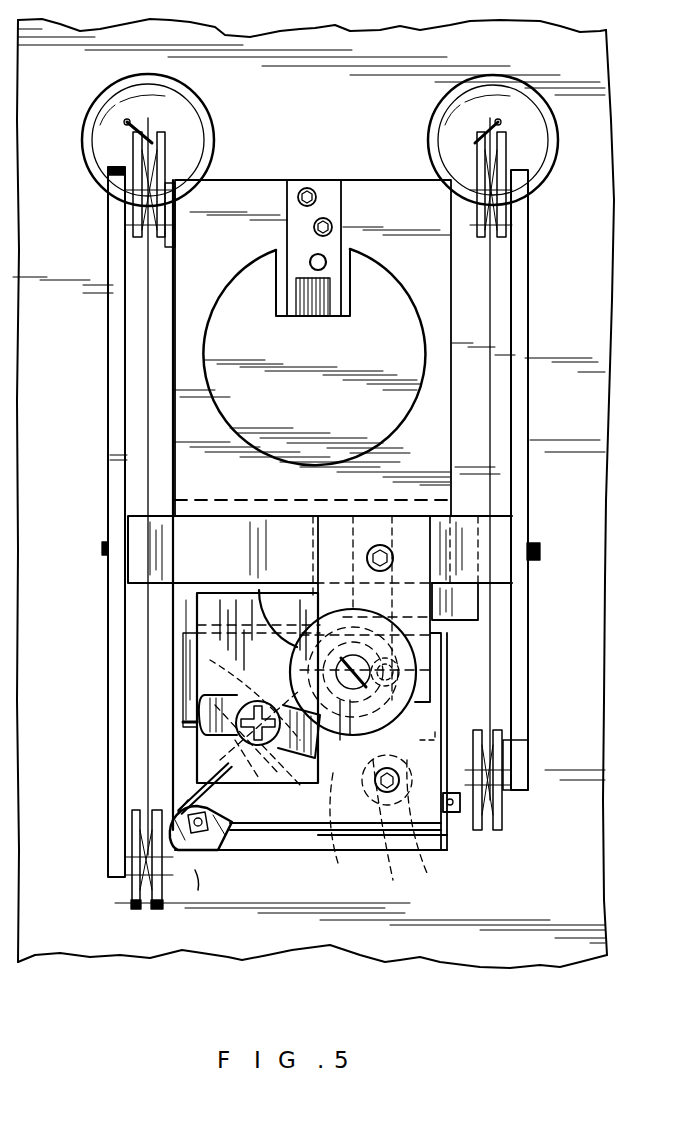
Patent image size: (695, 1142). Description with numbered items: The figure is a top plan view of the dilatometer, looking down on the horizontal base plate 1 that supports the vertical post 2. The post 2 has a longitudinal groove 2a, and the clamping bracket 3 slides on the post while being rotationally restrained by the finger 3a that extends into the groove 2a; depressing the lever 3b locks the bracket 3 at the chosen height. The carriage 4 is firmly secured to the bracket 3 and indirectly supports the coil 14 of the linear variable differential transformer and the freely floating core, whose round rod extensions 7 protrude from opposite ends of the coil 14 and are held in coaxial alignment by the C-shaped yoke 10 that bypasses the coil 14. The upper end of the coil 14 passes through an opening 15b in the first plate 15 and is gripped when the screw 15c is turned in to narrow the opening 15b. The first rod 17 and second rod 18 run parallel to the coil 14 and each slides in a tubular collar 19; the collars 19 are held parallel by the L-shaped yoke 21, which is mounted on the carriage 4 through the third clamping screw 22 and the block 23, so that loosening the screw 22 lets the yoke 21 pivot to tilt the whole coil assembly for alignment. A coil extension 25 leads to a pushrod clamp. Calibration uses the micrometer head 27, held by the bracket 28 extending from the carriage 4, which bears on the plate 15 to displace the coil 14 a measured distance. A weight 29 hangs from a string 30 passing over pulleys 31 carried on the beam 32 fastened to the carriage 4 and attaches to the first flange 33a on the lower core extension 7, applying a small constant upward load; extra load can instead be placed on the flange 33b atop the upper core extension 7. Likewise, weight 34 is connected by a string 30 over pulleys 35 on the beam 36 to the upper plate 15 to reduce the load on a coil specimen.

The base plate 1 is at (298, 860).
The vertical post 2 is at (236, 286).
The longitudinal groove 2a is at (277, 248).
The clamping bracket 3 is at (390, 198).
The finger 3a is at (312, 190).
The lever 3b is at (190, 505).
The carriage 4 is at (133, 540).
The round rod extensions 7 is at (258, 682).
The C-shaped yoke 10 is at (208, 612).
The coil 14 is at (320, 782).
The first plate 15 is at (185, 775).
The opening 15b is at (178, 812).
The screw 15c is at (198, 870).
The first rod 17 is at (420, 685).
The second rod 18 is at (433, 824).
The tubular collar 19 is at (376, 726).
The L-shaped yoke 21 is at (445, 828).
The third clamping screw 22 is at (430, 738).
The block 23 is at (470, 590).
The coil extension 25 is at (361, 824).
The micrometer head 27 is at (345, 578).
The bracket 28 is at (343, 525).
The weight 29 is at (105, 108).
The string 30 is at (145, 360).
The pulleys 31 is at (175, 165).
The beam 32 is at (118, 410).
The first flange 33a is at (215, 848).
The flange 33b is at (205, 700).
The weight 34 is at (560, 142).
The pulleys 35 is at (475, 162).
The beam 36 is at (518, 448).